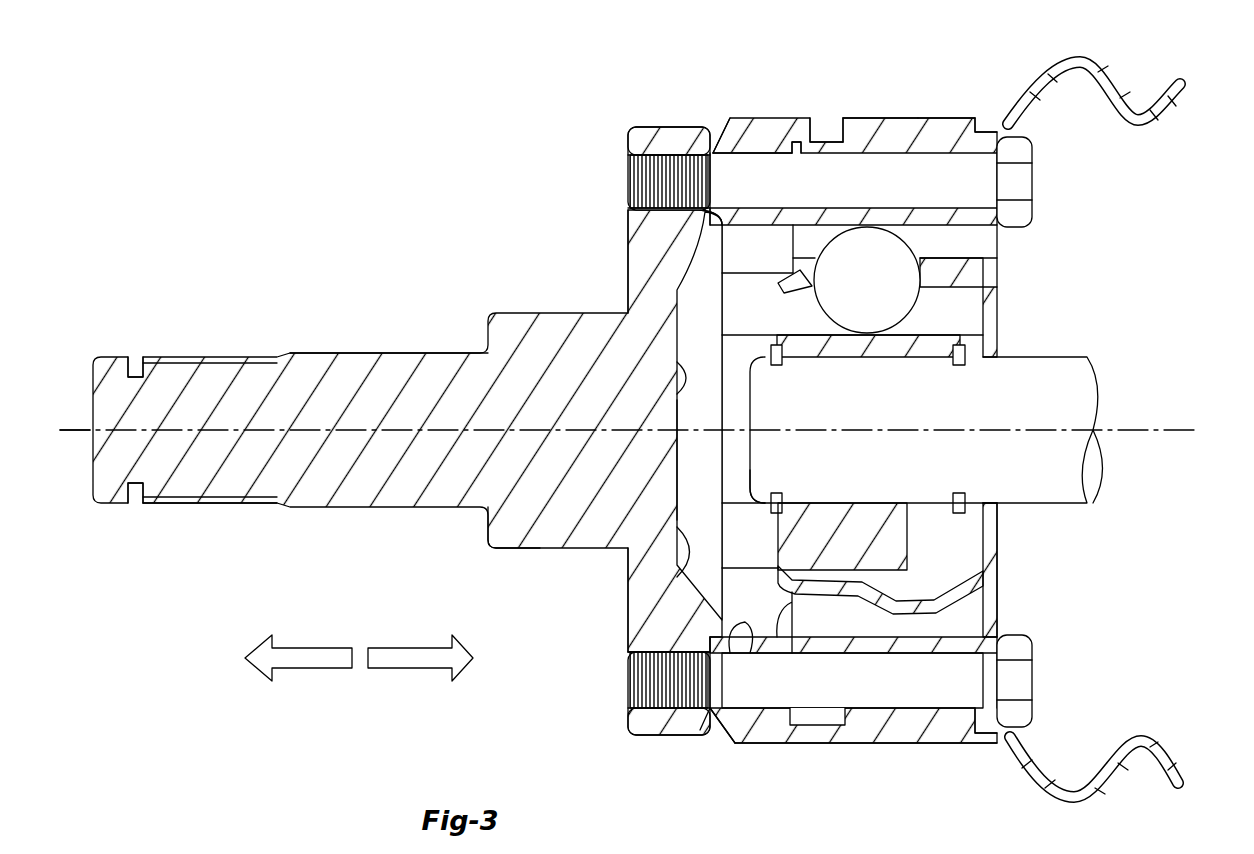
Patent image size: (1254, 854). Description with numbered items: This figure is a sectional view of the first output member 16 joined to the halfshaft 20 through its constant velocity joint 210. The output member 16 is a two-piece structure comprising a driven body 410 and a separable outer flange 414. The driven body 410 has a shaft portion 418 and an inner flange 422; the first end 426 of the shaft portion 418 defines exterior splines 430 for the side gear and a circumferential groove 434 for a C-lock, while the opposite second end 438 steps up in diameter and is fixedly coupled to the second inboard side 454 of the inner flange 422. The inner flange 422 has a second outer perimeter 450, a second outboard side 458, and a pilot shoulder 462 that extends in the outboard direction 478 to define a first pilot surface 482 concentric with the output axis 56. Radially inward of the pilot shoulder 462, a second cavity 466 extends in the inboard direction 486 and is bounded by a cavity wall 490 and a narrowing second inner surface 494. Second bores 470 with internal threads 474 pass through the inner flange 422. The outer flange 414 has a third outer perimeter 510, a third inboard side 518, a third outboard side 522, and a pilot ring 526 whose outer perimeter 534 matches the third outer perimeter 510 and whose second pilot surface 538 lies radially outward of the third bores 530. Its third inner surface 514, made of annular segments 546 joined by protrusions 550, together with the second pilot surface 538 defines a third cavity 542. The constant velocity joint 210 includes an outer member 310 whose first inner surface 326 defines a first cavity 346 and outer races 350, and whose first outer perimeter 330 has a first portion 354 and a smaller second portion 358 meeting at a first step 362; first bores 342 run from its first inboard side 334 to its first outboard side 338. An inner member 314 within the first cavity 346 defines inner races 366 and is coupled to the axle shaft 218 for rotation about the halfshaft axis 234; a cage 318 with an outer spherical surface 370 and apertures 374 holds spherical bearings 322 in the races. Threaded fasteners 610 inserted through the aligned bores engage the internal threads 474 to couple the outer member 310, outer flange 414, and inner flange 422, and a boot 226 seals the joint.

The first output member 16 is at (170, 232).
The halfshaft 20 is at (1203, 128).
The output axis 56 is at (88, 430).
The constant velocity joint 210 is at (1028, 545).
The axle shaft 218 is at (1060, 378).
The boot 226 is at (1115, 80).
The halfshaft axis 234 is at (1145, 430).
The outer member 310 is at (905, 175).
The inner member 314 is at (908, 510).
The cage 318 is at (1000, 280).
The spherical bearings 322 is at (878, 357).
The first inner surface 326 is at (975, 612).
The first outer perimeter 330 is at (918, 117).
The first inboard side 334 is at (785, 630).
The first outboard side 338 is at (998, 570).
The first bores 342 is at (1035, 163).
The first cavity 346 is at (1000, 523).
The outer races 350 is at (975, 243).
The first portion 354 is at (958, 114).
The second portion 358 is at (812, 118).
The first step 362 is at (858, 117).
The inner races 366 is at (950, 332).
The outer spherical surface 370 is at (755, 297).
The apertures 374 is at (816, 278).
The driven body 410 is at (378, 316).
The outer flange 414 is at (795, 745).
The shaft portion 418 is at (318, 555).
The inner flange 422 is at (568, 625).
The first end 426 is at (113, 488).
The exterior splines 430 is at (155, 505).
The circumferential groove 434 is at (110, 377).
The second end 438 is at (490, 585).
The second outer perimeter 450 is at (592, 80).
The second inboard side 454 is at (578, 260).
The second outboard side 458 is at (716, 146).
The pilot shoulder 462 is at (700, 262).
The second cavity 466 is at (595, 462).
The second bores 470 is at (598, 742).
The internal threads 474 is at (560, 683).
The outboard direction 478 is at (400, 672).
The first pilot surface 482 is at (600, 220).
The inboard direction 486 is at (300, 672).
The cavity wall 490 is at (605, 378).
The second inner surface 494 is at (595, 523).
The third outer perimeter 510 is at (775, 830).
The third inner surface 514 is at (852, 680).
The third inboard side 518 is at (665, 775).
The third outboard side 522 is at (800, 718).
The pilot ring 526 is at (778, 80).
The third bores 530 is at (745, 780).
The outer perimeter 534 is at (843, 116).
The second pilot surface 538 is at (797, 155).
The third cavity 542 is at (745, 408).
The annular segments 546 is at (738, 490).
The protrusions 550 is at (762, 548).
The threaded fasteners 610 is at (1020, 680).